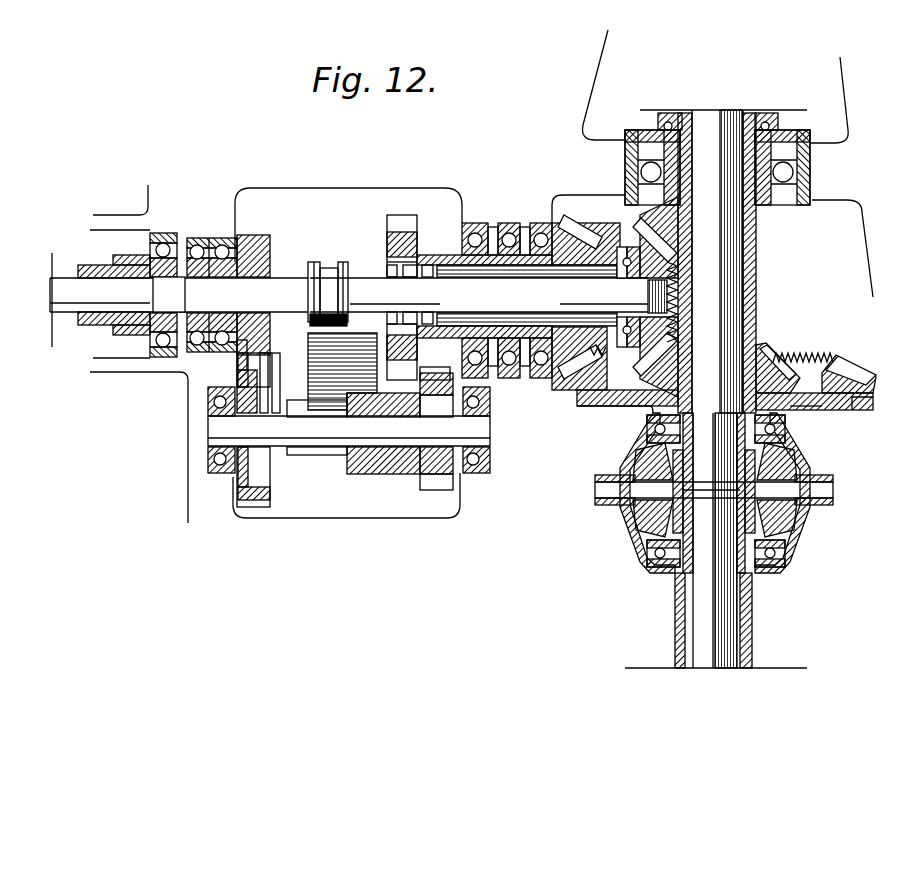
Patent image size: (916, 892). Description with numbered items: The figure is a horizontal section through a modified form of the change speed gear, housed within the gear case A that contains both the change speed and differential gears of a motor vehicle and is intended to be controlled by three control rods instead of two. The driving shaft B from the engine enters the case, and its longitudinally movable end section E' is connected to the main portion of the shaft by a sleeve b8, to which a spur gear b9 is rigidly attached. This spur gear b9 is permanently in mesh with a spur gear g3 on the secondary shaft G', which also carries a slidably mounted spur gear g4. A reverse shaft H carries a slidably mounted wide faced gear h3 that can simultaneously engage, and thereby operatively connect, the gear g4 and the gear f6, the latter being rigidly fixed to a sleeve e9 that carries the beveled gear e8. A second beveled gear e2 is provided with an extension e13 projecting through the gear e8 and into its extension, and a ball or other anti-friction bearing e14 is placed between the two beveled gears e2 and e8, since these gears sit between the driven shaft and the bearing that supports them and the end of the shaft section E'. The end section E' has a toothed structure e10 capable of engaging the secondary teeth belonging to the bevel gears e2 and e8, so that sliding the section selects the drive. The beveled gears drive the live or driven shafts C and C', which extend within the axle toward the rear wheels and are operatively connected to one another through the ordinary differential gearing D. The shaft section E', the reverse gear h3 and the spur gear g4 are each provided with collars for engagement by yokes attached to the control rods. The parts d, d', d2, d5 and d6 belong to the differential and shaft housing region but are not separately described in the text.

The gear case A is at (430, 522).
The driving shaft B is at (180, 295).
The sleeve b8 is at (169, 294).
The spur gear b9 is at (270, 255).
The wide faced gear h3 is at (308, 352).
The reverse shaft H is at (356, 362).
The secondary shaft G' is at (349, 452).
The spur gear g3 is at (252, 477).
The spur gear g4 is at (422, 478).
The gear f6 is at (408, 245).
The sleeve e9 is at (388, 253).
The toothed structure e10 is at (408, 277).
The longitudinally movable end section of the driving shaft E' is at (488, 295).
The extension of beveled gear e13 is at (517, 296).
The beveled gear e8 is at (586, 230).
The ball bearing e14 is at (622, 248).
The beveled gear e2 is at (648, 243).
The live or driven shaft C is at (710, 261).
The shaft housing wall d' is at (763, 263).
The ball bearing d2 is at (787, 205).
The bevel gear d6 is at (665, 383).
The bevel gear d5 is at (592, 388).
The differential casing d is at (704, 493).
The differential gearing D is at (796, 528).
The live or driven shaft C' is at (713, 540).